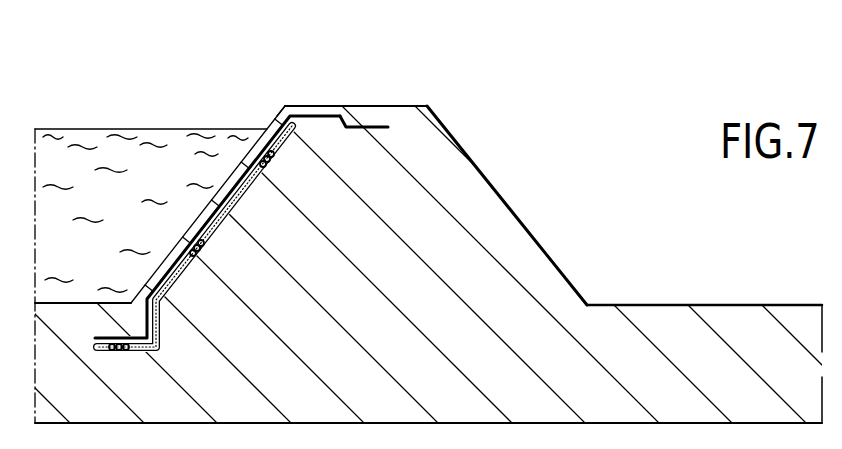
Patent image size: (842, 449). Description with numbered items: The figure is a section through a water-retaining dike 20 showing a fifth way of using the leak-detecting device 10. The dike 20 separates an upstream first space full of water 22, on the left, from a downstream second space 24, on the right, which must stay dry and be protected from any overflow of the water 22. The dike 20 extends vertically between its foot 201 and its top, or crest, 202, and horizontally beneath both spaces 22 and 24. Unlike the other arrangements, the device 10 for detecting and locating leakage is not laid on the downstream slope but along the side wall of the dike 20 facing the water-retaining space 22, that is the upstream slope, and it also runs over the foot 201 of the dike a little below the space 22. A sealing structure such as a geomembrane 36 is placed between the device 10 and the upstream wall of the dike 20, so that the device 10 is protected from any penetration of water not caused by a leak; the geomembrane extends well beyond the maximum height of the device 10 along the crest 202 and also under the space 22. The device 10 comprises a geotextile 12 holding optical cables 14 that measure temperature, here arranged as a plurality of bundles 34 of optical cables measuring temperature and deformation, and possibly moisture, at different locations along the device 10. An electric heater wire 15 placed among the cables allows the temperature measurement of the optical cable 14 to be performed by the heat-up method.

The device for detecting and locating leakage 10 is at (306, 116).
The geotextile 12 is at (240, 206).
The optical cable 14 is at (205, 250).
The electric heater wire 15 is at (205, 256).
The dike 20 is at (423, 146).
The first space full of water 22 is at (82, 152).
The second space 24 is at (608, 202).
The bundles of optical cables 34 is at (186, 232).
The geomembrane 36 is at (285, 107).
The dike foot 201 is at (383, 324).
The top of the dike 202 is at (372, 117).